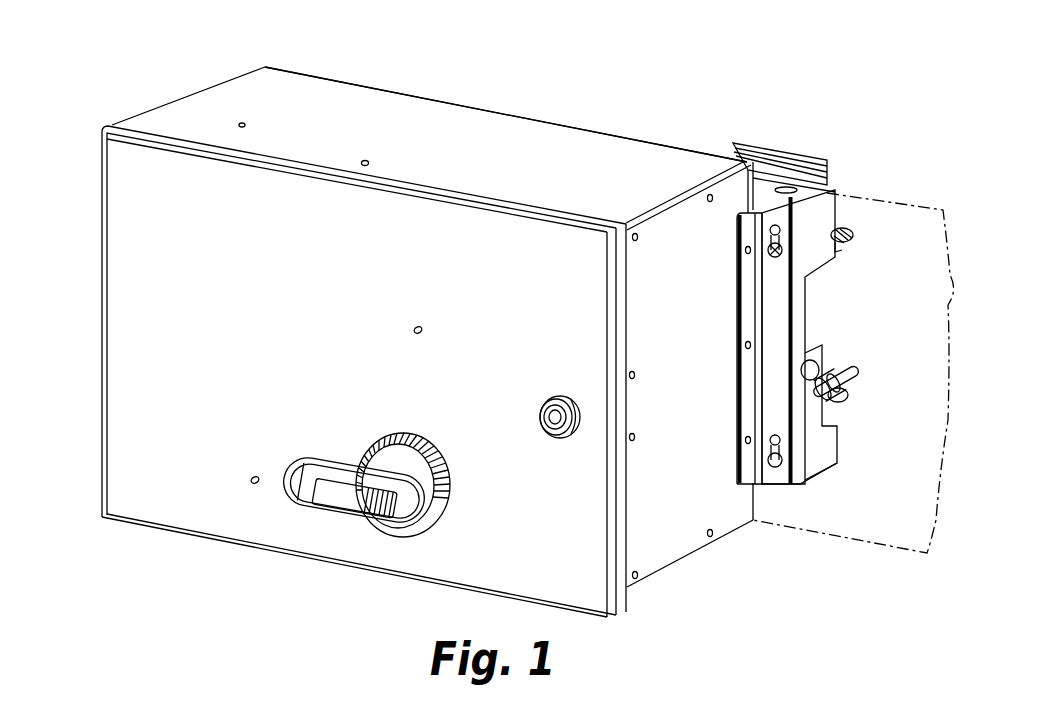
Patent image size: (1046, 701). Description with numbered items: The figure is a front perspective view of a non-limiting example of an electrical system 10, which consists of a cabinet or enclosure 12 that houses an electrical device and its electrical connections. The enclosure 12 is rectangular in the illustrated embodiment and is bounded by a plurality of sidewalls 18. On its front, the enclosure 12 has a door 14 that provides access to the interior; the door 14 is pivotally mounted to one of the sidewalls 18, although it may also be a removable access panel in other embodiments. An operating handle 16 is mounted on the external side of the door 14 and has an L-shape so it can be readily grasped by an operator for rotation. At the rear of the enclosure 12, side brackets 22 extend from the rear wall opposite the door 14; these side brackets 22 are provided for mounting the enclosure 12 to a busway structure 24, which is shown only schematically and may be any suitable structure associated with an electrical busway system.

The electrical system 10 is at (506, 90).
The enclosure 12 is at (400, 327).
The door 14 is at (344, 371).
The operating handle 16 is at (343, 510).
The sidewalls 18 is at (506, 327).
The side brackets 22 is at (798, 327).
The busway structure 24 is at (853, 330).